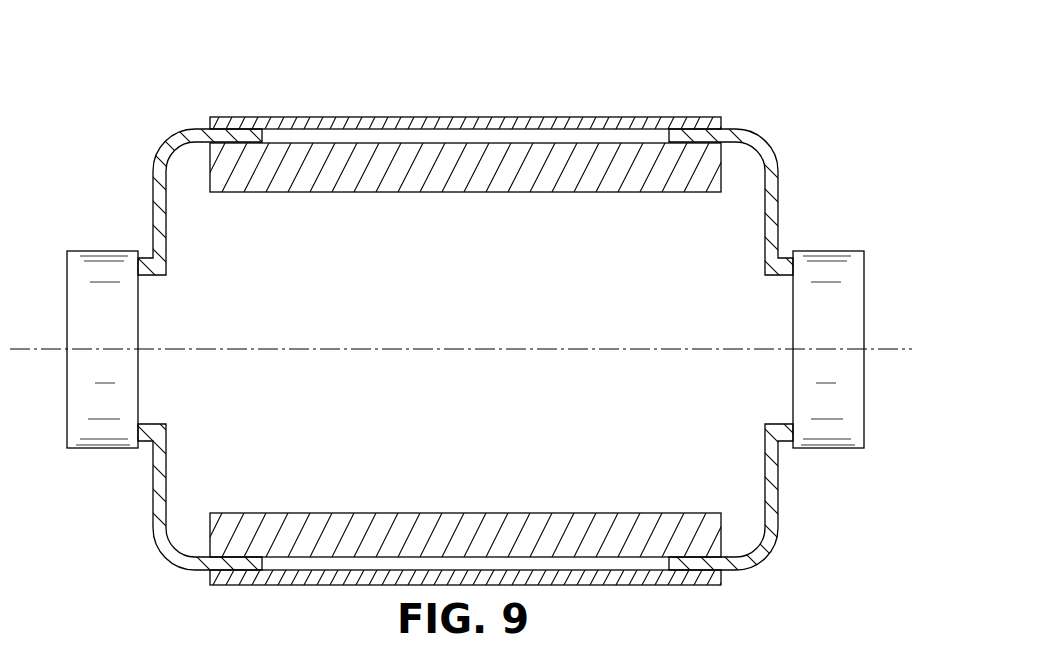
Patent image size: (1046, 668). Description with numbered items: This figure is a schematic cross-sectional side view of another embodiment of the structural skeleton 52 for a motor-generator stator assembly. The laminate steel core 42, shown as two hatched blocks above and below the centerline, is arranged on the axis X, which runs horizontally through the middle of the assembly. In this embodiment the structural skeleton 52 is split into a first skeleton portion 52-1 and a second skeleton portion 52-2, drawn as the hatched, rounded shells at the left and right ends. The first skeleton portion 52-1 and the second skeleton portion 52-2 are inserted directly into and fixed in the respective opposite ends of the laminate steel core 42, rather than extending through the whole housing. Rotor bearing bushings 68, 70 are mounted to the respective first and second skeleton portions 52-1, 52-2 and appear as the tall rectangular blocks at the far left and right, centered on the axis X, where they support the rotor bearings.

The laminate steel core 42 is at (283, 184).
The structural skeleton 52 is at (604, 104).
The first skeleton portion 52-1 is at (189, 124).
The second skeleton portion 52-2 is at (752, 127).
The rotor bearing bushing 68 is at (82, 402).
The rotor bearing bushing 70 is at (838, 395).
The axis X is at (872, 348).